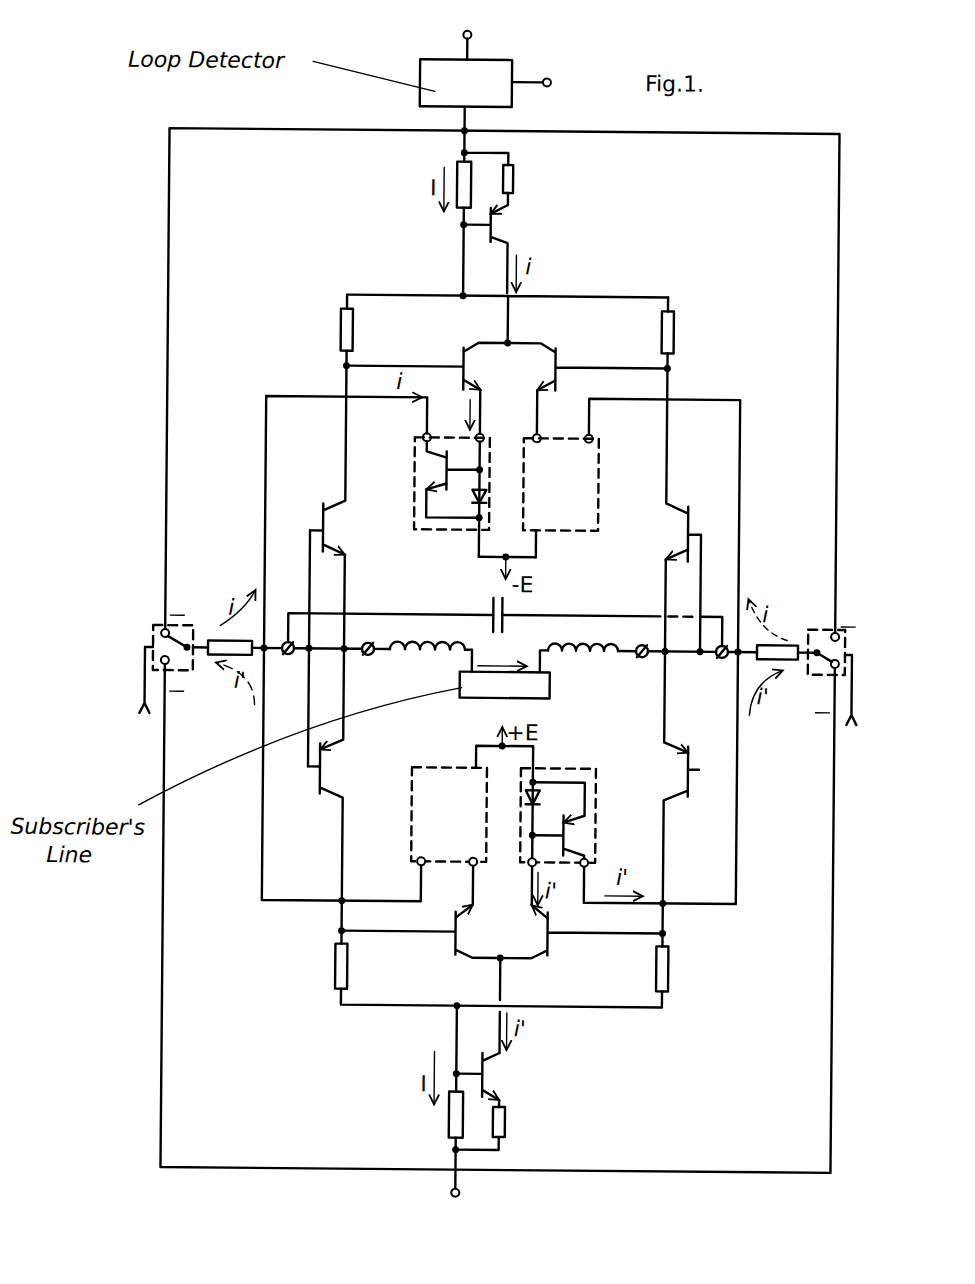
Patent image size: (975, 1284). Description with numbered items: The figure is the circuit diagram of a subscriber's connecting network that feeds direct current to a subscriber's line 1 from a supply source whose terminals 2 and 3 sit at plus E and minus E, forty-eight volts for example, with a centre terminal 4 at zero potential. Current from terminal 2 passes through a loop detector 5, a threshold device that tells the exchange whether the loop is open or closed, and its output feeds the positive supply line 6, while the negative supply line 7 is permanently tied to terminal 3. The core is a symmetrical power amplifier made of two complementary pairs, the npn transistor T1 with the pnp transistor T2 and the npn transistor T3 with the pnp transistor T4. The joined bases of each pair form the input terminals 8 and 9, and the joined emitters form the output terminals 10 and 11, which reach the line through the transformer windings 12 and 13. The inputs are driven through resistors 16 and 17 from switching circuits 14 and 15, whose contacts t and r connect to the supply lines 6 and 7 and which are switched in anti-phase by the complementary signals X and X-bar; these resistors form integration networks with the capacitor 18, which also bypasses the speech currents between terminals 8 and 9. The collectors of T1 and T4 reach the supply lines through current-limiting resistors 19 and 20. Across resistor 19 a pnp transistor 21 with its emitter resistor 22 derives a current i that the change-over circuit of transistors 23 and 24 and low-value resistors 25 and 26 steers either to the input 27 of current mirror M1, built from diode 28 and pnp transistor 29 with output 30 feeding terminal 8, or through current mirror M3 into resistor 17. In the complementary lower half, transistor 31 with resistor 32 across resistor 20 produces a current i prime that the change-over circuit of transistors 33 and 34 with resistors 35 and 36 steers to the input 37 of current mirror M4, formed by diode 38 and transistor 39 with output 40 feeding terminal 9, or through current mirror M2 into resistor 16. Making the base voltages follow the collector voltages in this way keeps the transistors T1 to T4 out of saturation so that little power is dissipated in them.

The subscriber's line 1 is at (478, 690).
The supply terminal 2 is at (467, 34).
The supply terminal 3 is at (465, 1196).
The centre terminal 4 is at (541, 77).
The loop detector 5 is at (418, 72).
The positive supply line 6 is at (313, 130).
The negative supply line 7 is at (282, 1168).
The input terminal 8 is at (288, 657).
The input terminal 9 is at (723, 657).
The output terminal 10 is at (369, 657).
The output terminal 11 is at (643, 657).
The winding 12 is at (431, 645).
The winding 13 is at (611, 645).
The switching circuit 14 is at (190, 627).
The switching circuit 15 is at (815, 627).
The resistor 16 is at (214, 658).
The resistor 17 is at (797, 660).
The capacitor 18 is at (492, 608).
The resistor 19 is at (457, 174).
The resistor 20 is at (452, 1123).
The pnp transistor 21 is at (497, 227).
The resistor 22 is at (511, 181).
The pnp transistor 23 is at (427, 388).
The pnp transistor 24 is at (553, 367).
The resistor 25 is at (350, 333).
The resistor 26 is at (659, 333).
The input terminal 27 is at (483, 432).
The diode 28 is at (485, 499).
The pnp transistor 29 is at (440, 471).
The output terminal 30 is at (421, 435).
The transistor 31 is at (493, 1076).
The resistor 32 is at (509, 1123).
The transistor 33 is at (581, 912).
The transistor 34 is at (421, 911).
The resistor 35 is at (659, 979).
The resistor 36 is at (350, 980).
The input terminal 37 is at (528, 868).
The diode 38 is at (528, 800).
The transistor 39 is at (577, 842).
The output terminal 40 is at (592, 868).
The npn transistor T1 is at (334, 506).
The pnp transistor T2 is at (331, 774).
The npn transistor T3 is at (669, 510).
The pnp transistor T4 is at (669, 777).
The current mirror M1 is at (418, 533).
The current mirror M2 is at (410, 766).
The current mirror M3 is at (573, 534).
The current mirror M4 is at (578, 766).